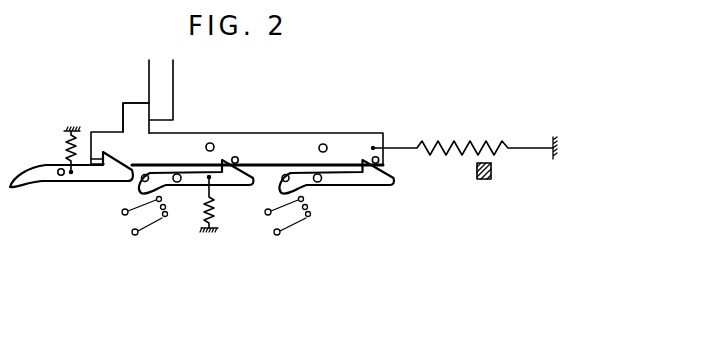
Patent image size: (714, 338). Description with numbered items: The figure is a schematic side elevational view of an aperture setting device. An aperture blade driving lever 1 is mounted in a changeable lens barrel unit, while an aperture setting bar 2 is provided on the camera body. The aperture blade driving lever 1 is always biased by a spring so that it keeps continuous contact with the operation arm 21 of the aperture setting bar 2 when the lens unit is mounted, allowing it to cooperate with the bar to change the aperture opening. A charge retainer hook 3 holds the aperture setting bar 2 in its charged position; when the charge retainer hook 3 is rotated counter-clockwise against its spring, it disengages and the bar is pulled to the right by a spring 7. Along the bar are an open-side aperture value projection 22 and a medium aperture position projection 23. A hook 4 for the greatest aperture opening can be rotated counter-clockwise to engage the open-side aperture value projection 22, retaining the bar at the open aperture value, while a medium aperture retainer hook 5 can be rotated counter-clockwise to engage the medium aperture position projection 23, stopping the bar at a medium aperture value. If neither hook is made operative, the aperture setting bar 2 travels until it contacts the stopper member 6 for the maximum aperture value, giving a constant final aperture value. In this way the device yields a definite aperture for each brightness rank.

The aperture blade driving lever 1 is at (173, 69).
The aperture setting bar 2 is at (262, 132).
The charge retainer hook 3 is at (97, 182).
The hook for the greatest aperture opening 4 is at (236, 187).
The medium aperture retainer hook 5 is at (373, 187).
The stopper member for the maximum aperture value 6 is at (483, 180).
The spring 7 is at (451, 141).
The operation arm 21 is at (130, 103).
The open-side aperture value projection 22 is at (211, 142).
The medium aperture position projection 23 is at (325, 143).